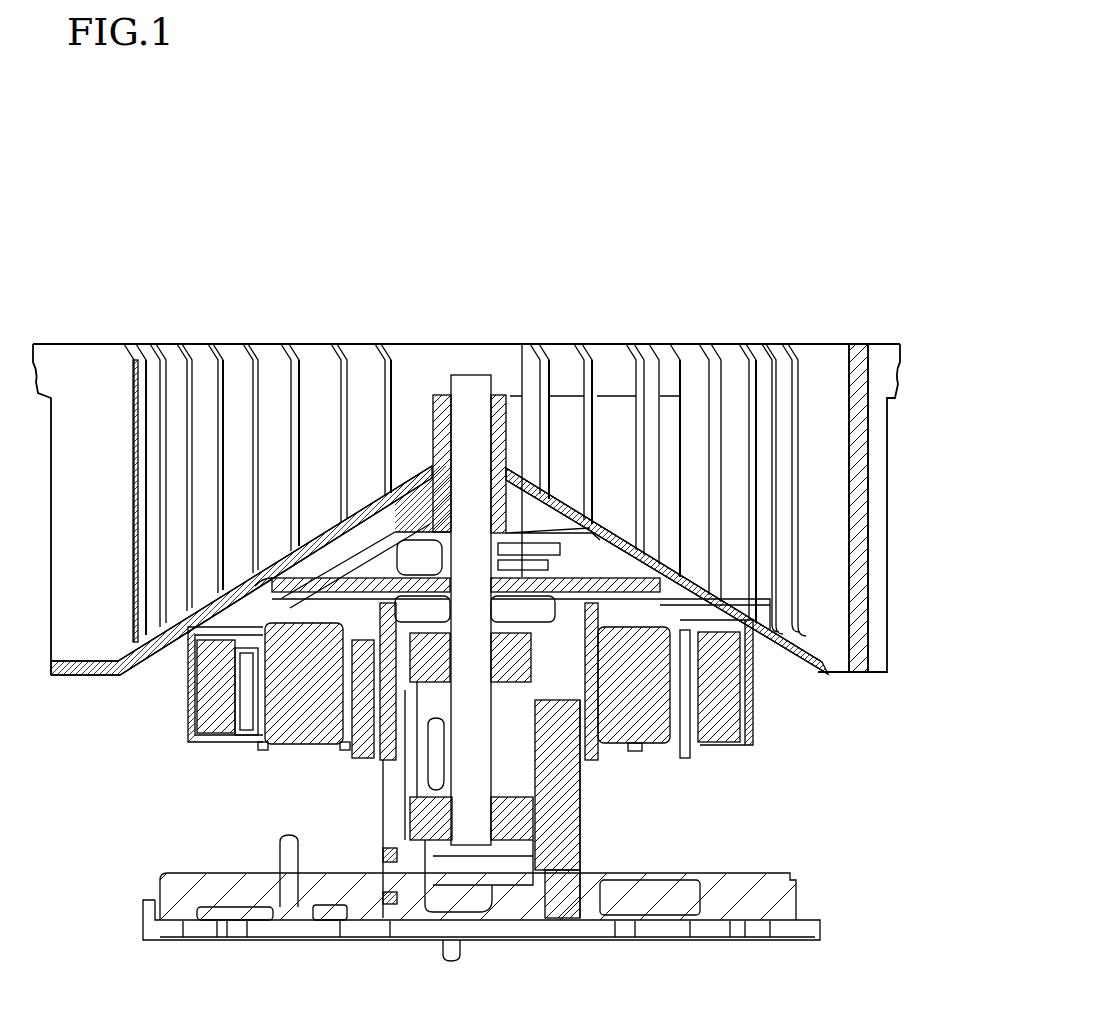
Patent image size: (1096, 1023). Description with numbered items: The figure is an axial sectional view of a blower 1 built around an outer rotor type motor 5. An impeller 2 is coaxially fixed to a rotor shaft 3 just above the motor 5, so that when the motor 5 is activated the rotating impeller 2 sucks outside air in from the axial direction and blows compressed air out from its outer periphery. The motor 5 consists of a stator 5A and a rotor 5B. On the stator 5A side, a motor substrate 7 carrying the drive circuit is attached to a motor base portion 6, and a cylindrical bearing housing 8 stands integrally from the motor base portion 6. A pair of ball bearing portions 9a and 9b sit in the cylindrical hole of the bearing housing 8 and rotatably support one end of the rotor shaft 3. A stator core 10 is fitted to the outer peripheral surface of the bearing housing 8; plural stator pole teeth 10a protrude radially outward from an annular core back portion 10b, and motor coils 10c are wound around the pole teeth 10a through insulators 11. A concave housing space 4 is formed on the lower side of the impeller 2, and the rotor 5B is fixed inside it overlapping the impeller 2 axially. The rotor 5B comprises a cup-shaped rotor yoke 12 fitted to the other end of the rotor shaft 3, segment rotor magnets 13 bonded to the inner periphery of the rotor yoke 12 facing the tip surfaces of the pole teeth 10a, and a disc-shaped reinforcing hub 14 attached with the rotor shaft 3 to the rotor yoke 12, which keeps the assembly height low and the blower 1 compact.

The blower 1 is at (780, 188).
The impeller 2 is at (130, 346).
The rotor shaft 3 is at (470, 380).
The housing space 4 is at (151, 667).
The motor 5 is at (800, 705).
The stator 5A is at (711, 750).
The rotor 5B is at (771, 706).
The motor base portion 6 is at (705, 872).
The motor substrate 7 is at (510, 945).
The bearing housing 8 is at (565, 795).
The bearing portion 9a is at (440, 572).
The bearing portion 9b is at (388, 832).
The stator core 10 is at (422, 744).
The stator pole teeth 10a is at (235, 735).
The annular core back portion 10b is at (345, 740).
The motor coils 10c is at (276, 740).
The insulator 11 is at (345, 555).
The rotor yoke 12 is at (700, 600).
The rotor magnets 13 is at (190, 706).
The reinforcing hub 14 is at (572, 570).